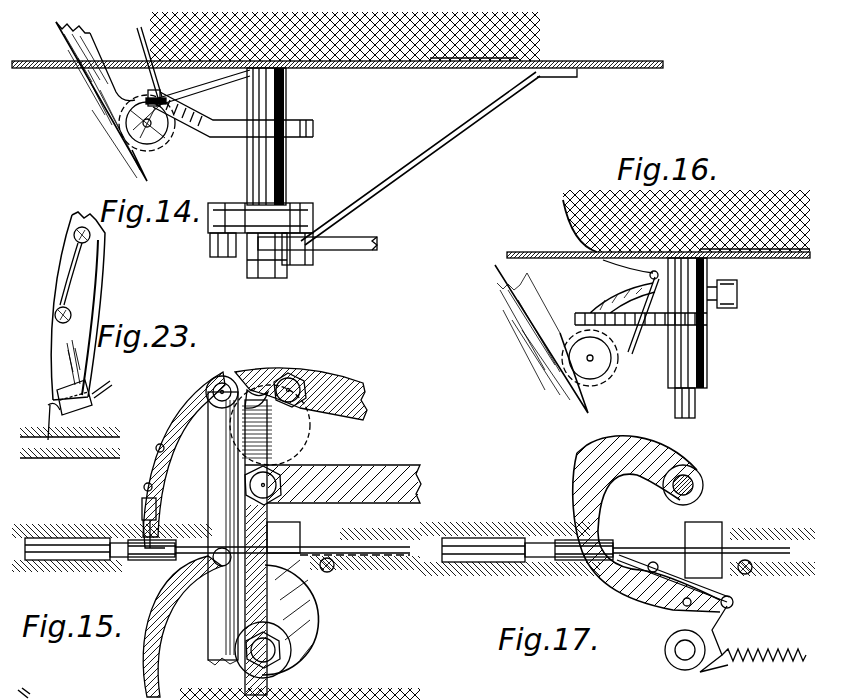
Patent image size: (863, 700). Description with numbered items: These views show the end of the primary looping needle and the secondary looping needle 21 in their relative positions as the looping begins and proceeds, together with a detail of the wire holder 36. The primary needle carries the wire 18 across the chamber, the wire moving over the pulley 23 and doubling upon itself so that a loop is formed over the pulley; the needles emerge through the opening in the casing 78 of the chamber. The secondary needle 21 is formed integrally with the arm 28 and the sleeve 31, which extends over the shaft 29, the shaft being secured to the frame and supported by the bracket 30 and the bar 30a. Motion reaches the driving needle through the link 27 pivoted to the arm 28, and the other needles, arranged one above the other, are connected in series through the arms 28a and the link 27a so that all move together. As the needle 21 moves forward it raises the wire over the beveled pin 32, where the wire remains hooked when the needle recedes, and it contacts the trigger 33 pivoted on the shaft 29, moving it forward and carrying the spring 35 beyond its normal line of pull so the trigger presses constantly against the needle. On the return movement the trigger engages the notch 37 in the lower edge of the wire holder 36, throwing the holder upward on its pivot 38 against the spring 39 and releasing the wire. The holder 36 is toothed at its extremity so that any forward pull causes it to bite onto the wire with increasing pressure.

In FIG. 14, the wire 18 is at (138, 32).
In FIG. 23, the wire 18 is at (100, 392).
In FIG. 14, the secondary looping needle 21 is at (224, 138).
In FIG. 16, the secondary looping needle 21 is at (644, 326).
In FIG. 23, the secondary looping needle 21 is at (55, 283).
In FIG. 15, the secondary looping needle 21 is at (177, 414).
In FIG. 17, the secondary looping needle 21 is at (652, 590).
In FIG. 14, the pulley 23 is at (176, 135).
In FIG. 14, the link 27 is at (355, 250).
In FIG. 15, the link 27 is at (340, 380).
In FIG. 15, the link 27a is at (214, 502).
In FIG. 14, the arm 28 is at (312, 222).
In FIG. 15, the arm 28 is at (290, 430).
In FIG. 15, the arm 28a is at (270, 392).
In FIG. 14, the shaft 29 is at (262, 278).
In FIG. 16, the shaft 29 is at (697, 399).
In FIG. 15, the shaft 29 is at (272, 488).
In FIG. 17, the shaft 29 is at (683, 652).
In FIG. 14, the bracket 30 is at (404, 172).
In FIG. 15, the bracket 30 is at (405, 478).
In FIG. 15, the bar 30a is at (268, 681).
In FIG. 14, the sleeve 31 is at (288, 167).
In FIG. 15, the beveled pin 32 is at (331, 571).
In FIG. 17, the beveled pin 32 is at (750, 571).
In FIG. 17, the trigger 33 is at (703, 672).
In FIG. 17, the spring 35 is at (745, 660).
In FIG. 23, the wire holder 36 is at (68, 346).
In FIG. 15, the wire holder 36 is at (142, 507).
In FIG. 23, the notch 37 is at (58, 384).
In FIG. 23, the pivot 38 is at (55, 318).
In FIG. 23, the spring 39 is at (78, 262).
In FIG. 15, the spring 39 is at (163, 452).
In FIG. 14, the casing 78 is at (58, 66).